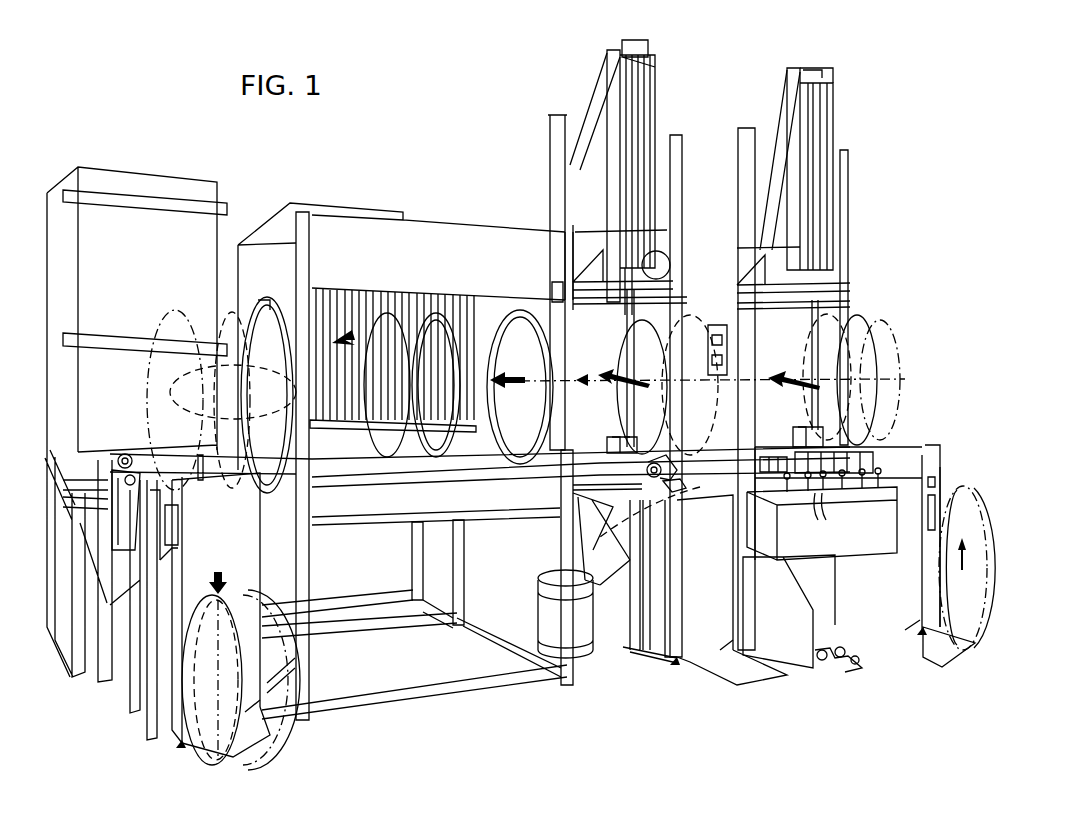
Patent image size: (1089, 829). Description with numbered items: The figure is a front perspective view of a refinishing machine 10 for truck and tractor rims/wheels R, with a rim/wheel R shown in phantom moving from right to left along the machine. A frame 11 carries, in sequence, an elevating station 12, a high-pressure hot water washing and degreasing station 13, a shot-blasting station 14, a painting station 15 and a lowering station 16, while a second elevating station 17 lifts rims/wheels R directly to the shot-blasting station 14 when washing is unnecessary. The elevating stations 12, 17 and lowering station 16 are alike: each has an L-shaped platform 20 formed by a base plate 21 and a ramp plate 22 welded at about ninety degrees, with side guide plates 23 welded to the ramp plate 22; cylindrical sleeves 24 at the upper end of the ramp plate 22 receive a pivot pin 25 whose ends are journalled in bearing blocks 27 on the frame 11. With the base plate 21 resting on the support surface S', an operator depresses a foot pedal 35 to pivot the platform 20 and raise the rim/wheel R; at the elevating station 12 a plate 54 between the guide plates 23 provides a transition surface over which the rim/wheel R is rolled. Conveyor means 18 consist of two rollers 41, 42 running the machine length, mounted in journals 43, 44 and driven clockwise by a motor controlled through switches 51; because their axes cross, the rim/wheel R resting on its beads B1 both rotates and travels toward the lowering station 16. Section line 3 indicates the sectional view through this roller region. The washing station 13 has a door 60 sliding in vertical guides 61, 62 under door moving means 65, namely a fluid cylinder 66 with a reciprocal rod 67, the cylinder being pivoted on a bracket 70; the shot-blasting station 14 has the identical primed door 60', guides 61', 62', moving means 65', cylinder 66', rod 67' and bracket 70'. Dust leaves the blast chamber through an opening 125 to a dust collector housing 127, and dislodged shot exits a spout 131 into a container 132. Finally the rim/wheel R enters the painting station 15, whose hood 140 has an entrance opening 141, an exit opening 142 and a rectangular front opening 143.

The section line 3 is at (718, 92).
The refinishing machine 10 is at (912, 85).
The frame 11 is at (468, 580).
The elevating station 12 is at (974, 481).
The washing and degreasing station 13 is at (878, 300).
The shot-blasting station 14 is at (698, 228).
The painting station 15 is at (508, 285).
The lowering station 16 is at (222, 766).
The second elevating station 17 is at (704, 686).
The conveyor means 18 is at (165, 440).
The L-shaped platform 20 is at (172, 737).
The base plate 21 is at (262, 739).
The ramp plate 22 is at (238, 564).
The side guide plate 23 is at (170, 606).
The cylindrical sleeve 24 is at (178, 548).
The pivot pin 25 is at (678, 470).
The bearing block 27 is at (688, 490).
The foot pedal 35 is at (840, 675).
The roller 41 is at (456, 470).
The roller 42 is at (512, 462).
The journal 43 is at (118, 456).
The journal 44 is at (953, 455).
The switch 51 is at (822, 514).
The transition plate 54 is at (904, 477).
The door 60 is at (794, 373).
The door 60' is at (610, 371).
The vertical guide 61 is at (746, 374).
The vertical guide 61' is at (554, 265).
The vertical guide 62 is at (859, 294).
The vertical guide 62' is at (694, 382).
The door moving means 65 is at (806, 189).
The door moving means 65' is at (637, 170).
The fluid cylinder 66 is at (827, 169).
The fluid cylinder 66' is at (650, 182).
The reciprocal rod 67 is at (784, 423).
The reciprocal rod 67' is at (636, 427).
The bracket 70 is at (819, 62).
The bracket 70' is at (633, 40).
The dust opening 125 is at (104, 682).
The dust collector housing 127 is at (155, 251).
The discharge spout 131 is at (602, 539).
The container 132 is at (560, 610).
The hood 140 is at (414, 233).
The entrance opening 141 is at (520, 387).
The exit opening 142 is at (281, 300).
The front opening 143 is at (409, 297).
The rim/wheel R is at (150, 328).
The bead B1 is at (178, 315).
The support surface S' is at (588, 736).